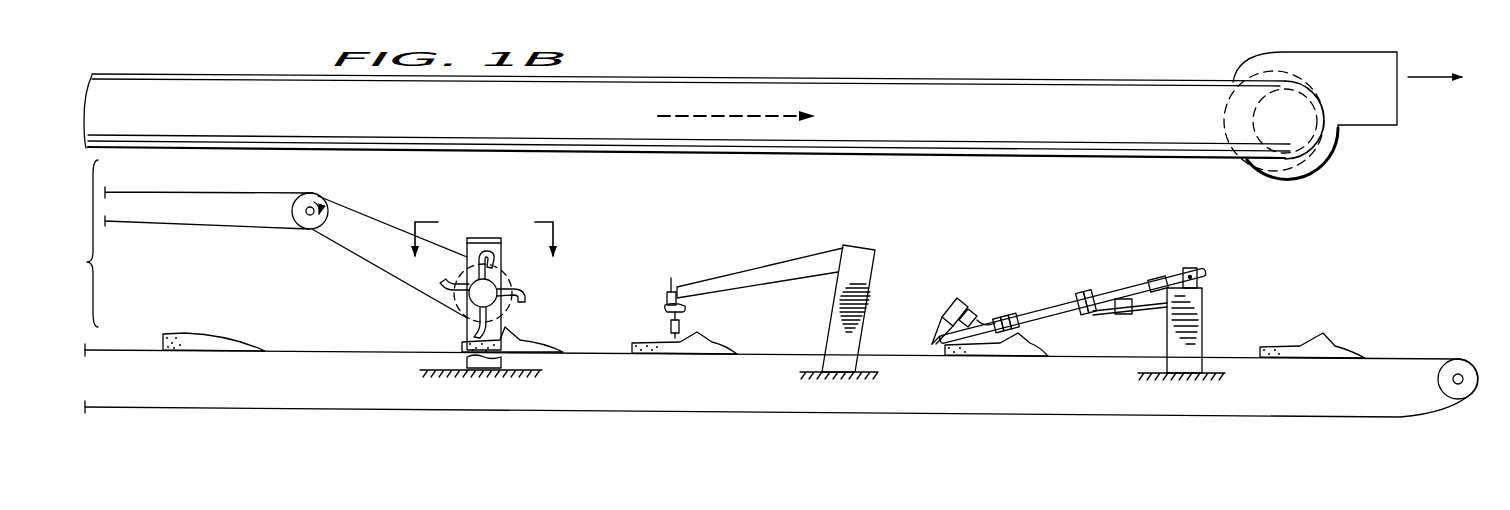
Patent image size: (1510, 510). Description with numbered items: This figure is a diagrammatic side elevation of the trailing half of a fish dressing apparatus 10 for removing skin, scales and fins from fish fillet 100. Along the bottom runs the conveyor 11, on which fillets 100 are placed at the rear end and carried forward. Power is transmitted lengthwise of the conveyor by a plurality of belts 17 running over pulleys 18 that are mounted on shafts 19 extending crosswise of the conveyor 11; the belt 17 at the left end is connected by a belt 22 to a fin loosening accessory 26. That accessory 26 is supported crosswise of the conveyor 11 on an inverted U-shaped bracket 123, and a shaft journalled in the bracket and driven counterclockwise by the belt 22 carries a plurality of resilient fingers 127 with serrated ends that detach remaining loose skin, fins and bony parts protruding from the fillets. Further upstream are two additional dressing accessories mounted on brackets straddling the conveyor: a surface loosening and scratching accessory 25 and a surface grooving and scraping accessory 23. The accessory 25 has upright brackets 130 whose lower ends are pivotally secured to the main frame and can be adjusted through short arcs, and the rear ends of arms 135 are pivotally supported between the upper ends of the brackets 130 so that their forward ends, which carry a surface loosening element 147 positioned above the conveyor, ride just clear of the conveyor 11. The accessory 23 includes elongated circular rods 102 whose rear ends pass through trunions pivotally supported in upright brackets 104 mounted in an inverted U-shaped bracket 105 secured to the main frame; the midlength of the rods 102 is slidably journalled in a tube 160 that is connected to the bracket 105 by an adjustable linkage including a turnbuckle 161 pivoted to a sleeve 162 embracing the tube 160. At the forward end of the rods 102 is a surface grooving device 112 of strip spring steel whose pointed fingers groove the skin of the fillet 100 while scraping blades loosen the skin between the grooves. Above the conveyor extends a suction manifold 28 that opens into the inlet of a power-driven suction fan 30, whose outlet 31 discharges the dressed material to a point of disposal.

The fish dressing apparatus 10 is at (1057, 72).
The conveyor 11 is at (317, 343).
The belts 17 is at (152, 226).
The pulleys 18 is at (486, 221).
The shafts 19 is at (306, 213).
The belt 22 is at (367, 266).
The surface grooving and scraping accessory 23 is at (1226, 292).
The surface loosening and scratching accessory 25 is at (826, 243).
The fin loosening accessory 26 is at (524, 282).
The suction manifold 28 is at (900, 90).
The suction fan 30 is at (1283, 52).
The outlet 31 is at (1393, 52).
The fish fillet 100 is at (180, 333).
The rods 102 is at (1160, 278).
The brackets 104 is at (1191, 268).
The inverted U-shaped bracket 105 is at (1202, 320).
The surface grooving device 112 is at (968, 298).
The inverted U-shaped bracket 123 is at (480, 238).
The resilient fingers 127 is at (443, 293).
The upright brackets 130 is at (875, 278).
The arms 135 is at (775, 265).
The nozzle 147 is at (670, 280).
The tube 160 is at (1042, 310).
The turnbuckle 161 is at (1123, 315).
The sleeve 162 is at (1093, 295).